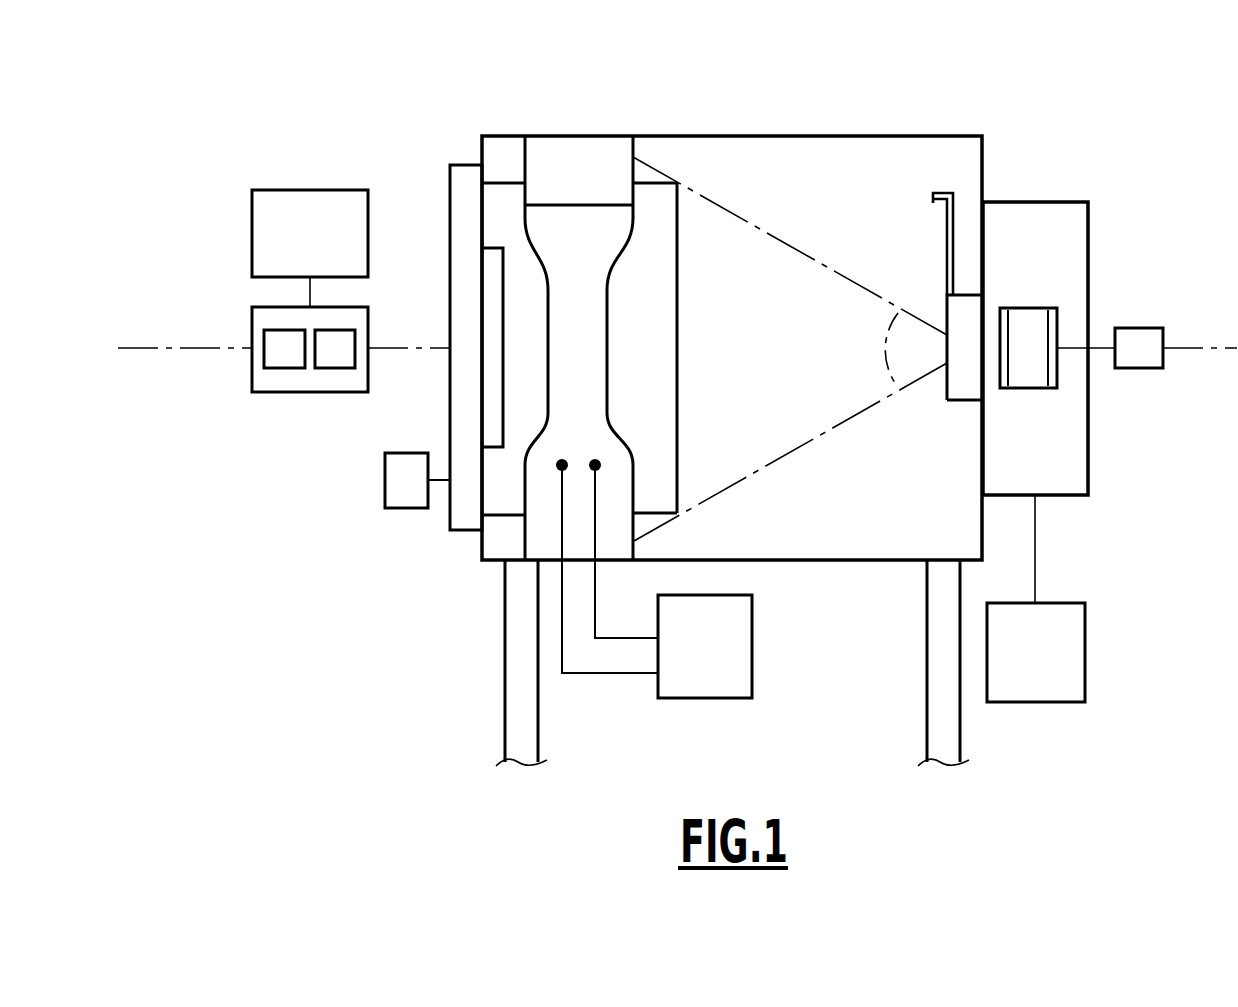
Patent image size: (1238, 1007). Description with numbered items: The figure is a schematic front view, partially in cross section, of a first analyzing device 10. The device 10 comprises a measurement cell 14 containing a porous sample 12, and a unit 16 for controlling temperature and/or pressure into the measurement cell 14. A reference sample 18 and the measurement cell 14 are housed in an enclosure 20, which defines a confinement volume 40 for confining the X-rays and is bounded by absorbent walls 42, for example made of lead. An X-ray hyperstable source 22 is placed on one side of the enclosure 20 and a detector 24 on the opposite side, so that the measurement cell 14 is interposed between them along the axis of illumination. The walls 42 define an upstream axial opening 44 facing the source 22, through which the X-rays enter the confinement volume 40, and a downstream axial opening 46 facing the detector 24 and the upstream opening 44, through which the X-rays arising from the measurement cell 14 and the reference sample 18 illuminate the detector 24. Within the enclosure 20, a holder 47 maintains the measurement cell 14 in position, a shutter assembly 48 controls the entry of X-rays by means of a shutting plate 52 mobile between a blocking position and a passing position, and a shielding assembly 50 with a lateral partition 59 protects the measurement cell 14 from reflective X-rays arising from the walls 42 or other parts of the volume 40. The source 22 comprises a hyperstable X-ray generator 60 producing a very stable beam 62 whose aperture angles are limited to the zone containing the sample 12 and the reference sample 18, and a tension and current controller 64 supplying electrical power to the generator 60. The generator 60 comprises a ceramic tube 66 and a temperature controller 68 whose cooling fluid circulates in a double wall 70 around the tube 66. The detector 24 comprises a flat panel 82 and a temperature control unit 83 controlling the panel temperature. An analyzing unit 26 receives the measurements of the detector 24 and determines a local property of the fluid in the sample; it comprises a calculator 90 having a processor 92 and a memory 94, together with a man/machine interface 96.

The device 10 is at (1014, 125).
The porous sample 12 is at (583, 370).
The measurement cell 14 is at (612, 325).
The unit for controlling temperature and/or pressure 16 is at (654, 578).
The reference sample 18 is at (507, 317).
The enclosure 20 is at (774, 131).
The X-ray hyperstable source 22 is at (1100, 223).
The detector 24 is at (440, 385).
The analyzing unit 26 is at (288, 291).
The confinement volume 40 is at (790, 248).
The absorbent walls 42 is at (813, 562).
The upstream axial opening 44 is at (970, 370).
The downstream axial opening 46 is at (483, 473).
The holder 47 is at (559, 178).
The shutter assembly 48 is at (946, 383).
The shielding assembly 50 is at (680, 433).
The shutting plate 52 is at (948, 242).
The partition 59 is at (657, 520).
The hyperstable X-ray generator 60 is at (1094, 309).
The beam 62 is at (768, 463).
The tension and current controller 64 is at (1040, 663).
The ceramic tube 66 is at (1028, 353).
The temperature controller 68 is at (1138, 359).
The double wall 70 is at (1056, 322).
The flat panel 82 is at (467, 515).
The temperature control unit 83 is at (402, 478).
The calculator 90 is at (265, 392).
The processor 92 is at (276, 343).
The memory 94 is at (347, 343).
The man/machine interface 96 is at (310, 190).